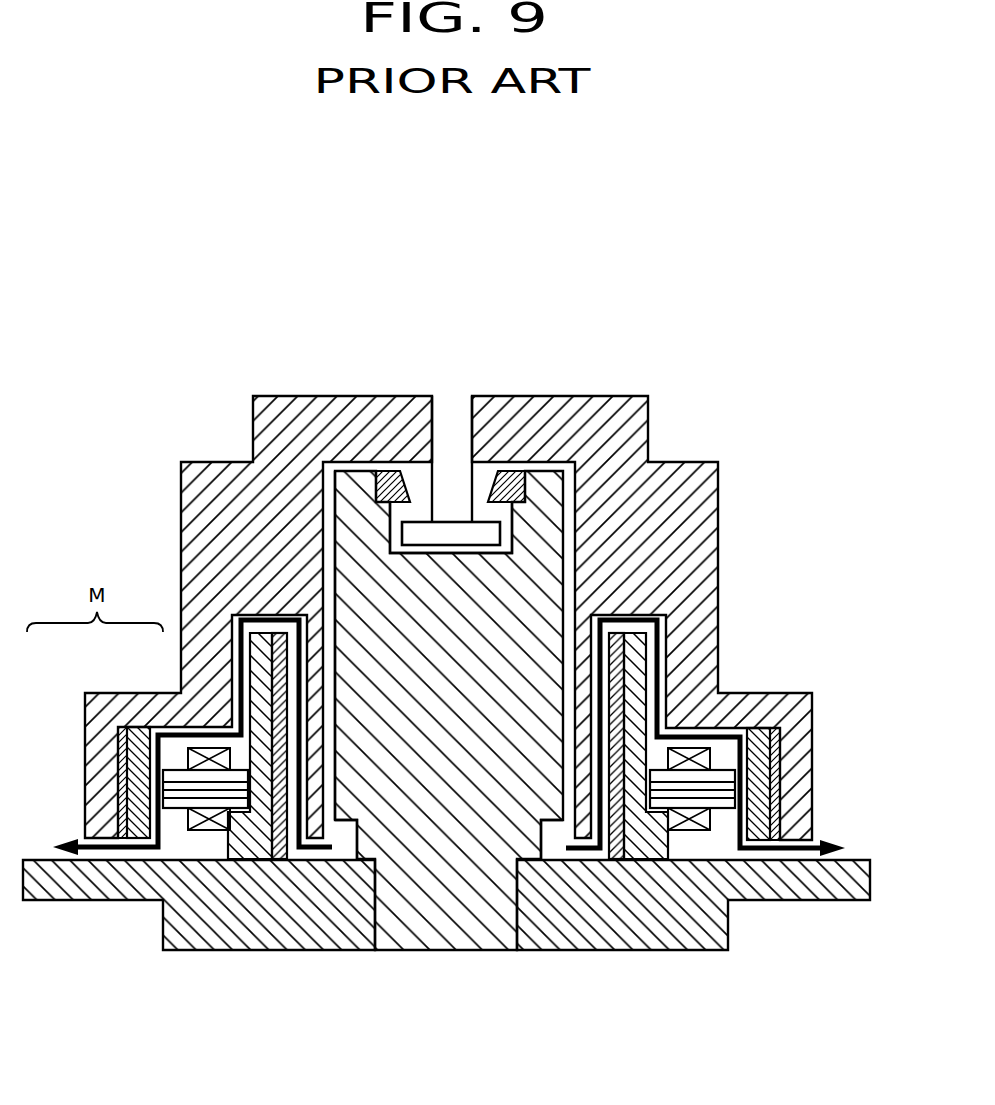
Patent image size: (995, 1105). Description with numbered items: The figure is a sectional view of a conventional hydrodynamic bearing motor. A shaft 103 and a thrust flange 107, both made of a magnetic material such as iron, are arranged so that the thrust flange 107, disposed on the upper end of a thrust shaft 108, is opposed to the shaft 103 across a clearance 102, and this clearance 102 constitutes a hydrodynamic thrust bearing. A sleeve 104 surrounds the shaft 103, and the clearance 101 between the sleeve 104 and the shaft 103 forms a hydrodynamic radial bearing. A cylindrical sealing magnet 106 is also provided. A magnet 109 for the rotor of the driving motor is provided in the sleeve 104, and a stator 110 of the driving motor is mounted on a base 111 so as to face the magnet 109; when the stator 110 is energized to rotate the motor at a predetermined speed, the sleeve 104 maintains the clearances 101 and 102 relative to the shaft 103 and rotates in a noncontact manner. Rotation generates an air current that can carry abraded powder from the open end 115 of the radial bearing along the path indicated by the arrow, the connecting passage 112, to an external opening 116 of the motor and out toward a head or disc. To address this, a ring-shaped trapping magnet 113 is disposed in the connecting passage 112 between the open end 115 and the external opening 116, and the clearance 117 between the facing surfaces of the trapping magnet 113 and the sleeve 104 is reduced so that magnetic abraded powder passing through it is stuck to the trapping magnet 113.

The clearance 101 is at (568, 735).
The clearance 102 is at (408, 548).
The shaft 103 is at (343, 553).
The sleeve 104 is at (217, 473).
The cylindrical sealing magnet 106 is at (510, 485).
The thrust flange 107 is at (487, 533).
The thrust shaft 108 is at (453, 427).
The magnet 109 is at (177, 783).
The stator 110 is at (120, 773).
The base 111 is at (193, 907).
The connecting passage 112 is at (776, 850).
The trapping magnet 113 is at (618, 658).
The open end 115 is at (563, 822).
The external opening 116 is at (805, 838).
The clearance 117 is at (613, 815).